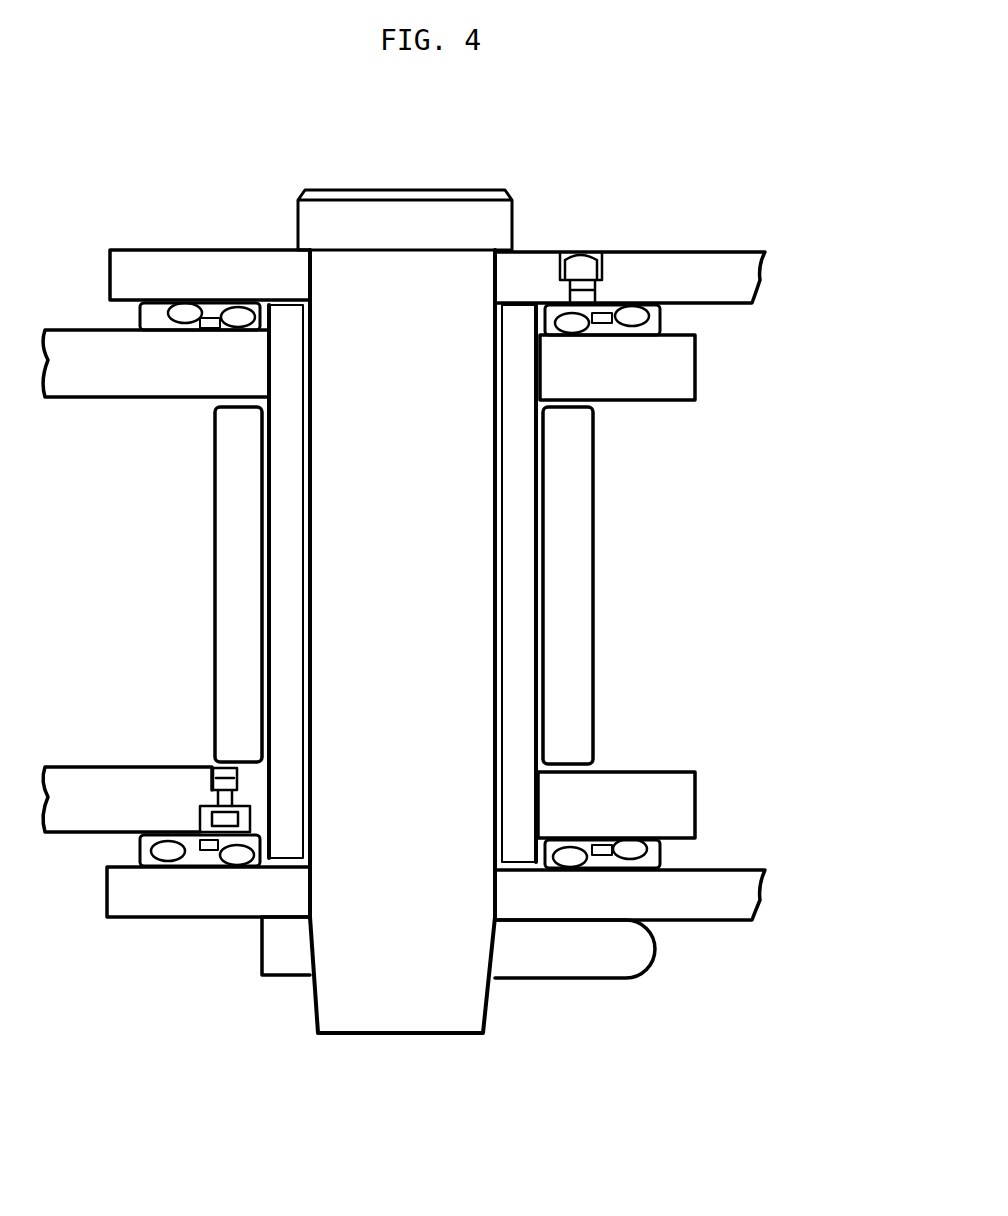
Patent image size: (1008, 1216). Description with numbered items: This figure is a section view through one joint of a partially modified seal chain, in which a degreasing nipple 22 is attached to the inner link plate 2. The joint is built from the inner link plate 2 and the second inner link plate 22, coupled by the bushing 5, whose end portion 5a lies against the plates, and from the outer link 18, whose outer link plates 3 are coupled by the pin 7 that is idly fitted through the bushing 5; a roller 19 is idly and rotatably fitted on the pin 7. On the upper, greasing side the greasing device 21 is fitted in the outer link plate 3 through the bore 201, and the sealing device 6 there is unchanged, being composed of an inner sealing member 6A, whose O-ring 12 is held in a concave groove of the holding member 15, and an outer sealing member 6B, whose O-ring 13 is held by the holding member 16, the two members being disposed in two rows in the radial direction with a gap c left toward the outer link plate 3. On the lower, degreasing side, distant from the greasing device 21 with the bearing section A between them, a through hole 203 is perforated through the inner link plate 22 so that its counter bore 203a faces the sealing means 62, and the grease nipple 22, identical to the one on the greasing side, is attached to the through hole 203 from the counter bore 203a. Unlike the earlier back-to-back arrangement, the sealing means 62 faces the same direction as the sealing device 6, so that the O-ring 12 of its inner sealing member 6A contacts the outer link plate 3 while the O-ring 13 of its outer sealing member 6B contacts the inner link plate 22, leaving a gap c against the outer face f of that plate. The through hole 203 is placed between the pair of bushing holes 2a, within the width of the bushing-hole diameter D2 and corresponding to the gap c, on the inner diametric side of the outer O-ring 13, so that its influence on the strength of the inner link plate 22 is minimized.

The O-ring 12 is at (242, 312).
The inner link plate 2 is at (65, 335).
The grease nipple (degreasing device) 22 is at (228, 1005).
The outer link plate 3 is at (725, 268).
The bushing 5 is at (517, 628).
The inner ring 5a is at (298, 318).
The sealing device 6 is at (712, 405).
The inner sealing member 6A is at (590, 335).
The outer sealing member 6B is at (633, 335).
The sealing means (degreasing-side sealing device) 62 is at (188, 698).
The pin 7 is at (455, 553).
The O-ring 13 is at (180, 308).
The holding member 15 is at (208, 335).
The holding member 16 is at (152, 333).
The outer link 18 is at (515, 982).
The roller 19 is at (570, 493).
The bolt 201 is at (600, 256).
The through hole 203 is at (228, 780).
The counter bore 203a is at (243, 824).
The greasing device 21 is at (572, 238).
The bushing hole 2a is at (532, 803).
The bearing section A is at (300, 548).
The gap c is at (553, 325).
The outer face f is at (557, 845).
The diameter D2 is at (533, 368).